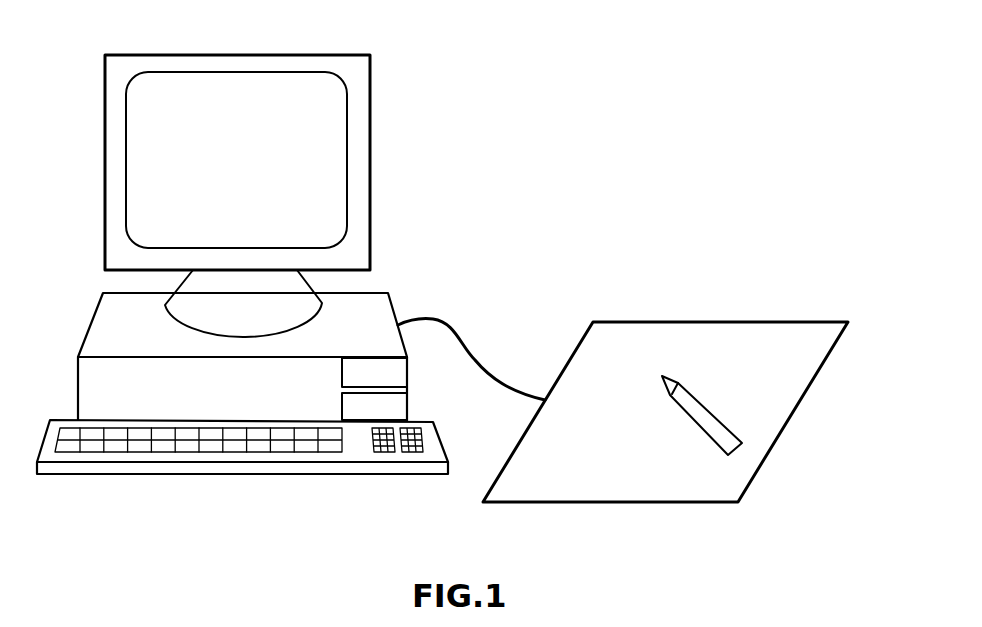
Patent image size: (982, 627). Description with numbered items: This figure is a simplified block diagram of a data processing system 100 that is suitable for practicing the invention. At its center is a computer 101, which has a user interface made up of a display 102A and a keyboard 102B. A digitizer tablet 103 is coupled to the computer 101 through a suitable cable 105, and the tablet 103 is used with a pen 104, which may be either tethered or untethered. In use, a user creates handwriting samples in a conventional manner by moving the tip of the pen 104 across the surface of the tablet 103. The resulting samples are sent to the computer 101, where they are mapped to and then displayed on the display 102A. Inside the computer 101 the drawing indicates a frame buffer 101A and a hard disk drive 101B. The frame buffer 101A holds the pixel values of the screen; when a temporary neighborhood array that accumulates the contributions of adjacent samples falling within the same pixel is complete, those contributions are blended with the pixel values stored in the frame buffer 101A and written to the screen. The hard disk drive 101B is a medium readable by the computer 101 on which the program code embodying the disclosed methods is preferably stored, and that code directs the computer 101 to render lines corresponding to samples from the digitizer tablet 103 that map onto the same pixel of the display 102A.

The data processing system 100 is at (578, 135).
The computer 101 is at (87, 332).
The frame buffer 101A is at (392, 358).
The hard disk drive (HDD) 101B is at (408, 406).
The display 102A is at (196, 55).
The keyboard 102B is at (148, 474).
The digitizer tablet 103 is at (658, 322).
The pen 104 is at (720, 420).
The cable 105 is at (458, 322).